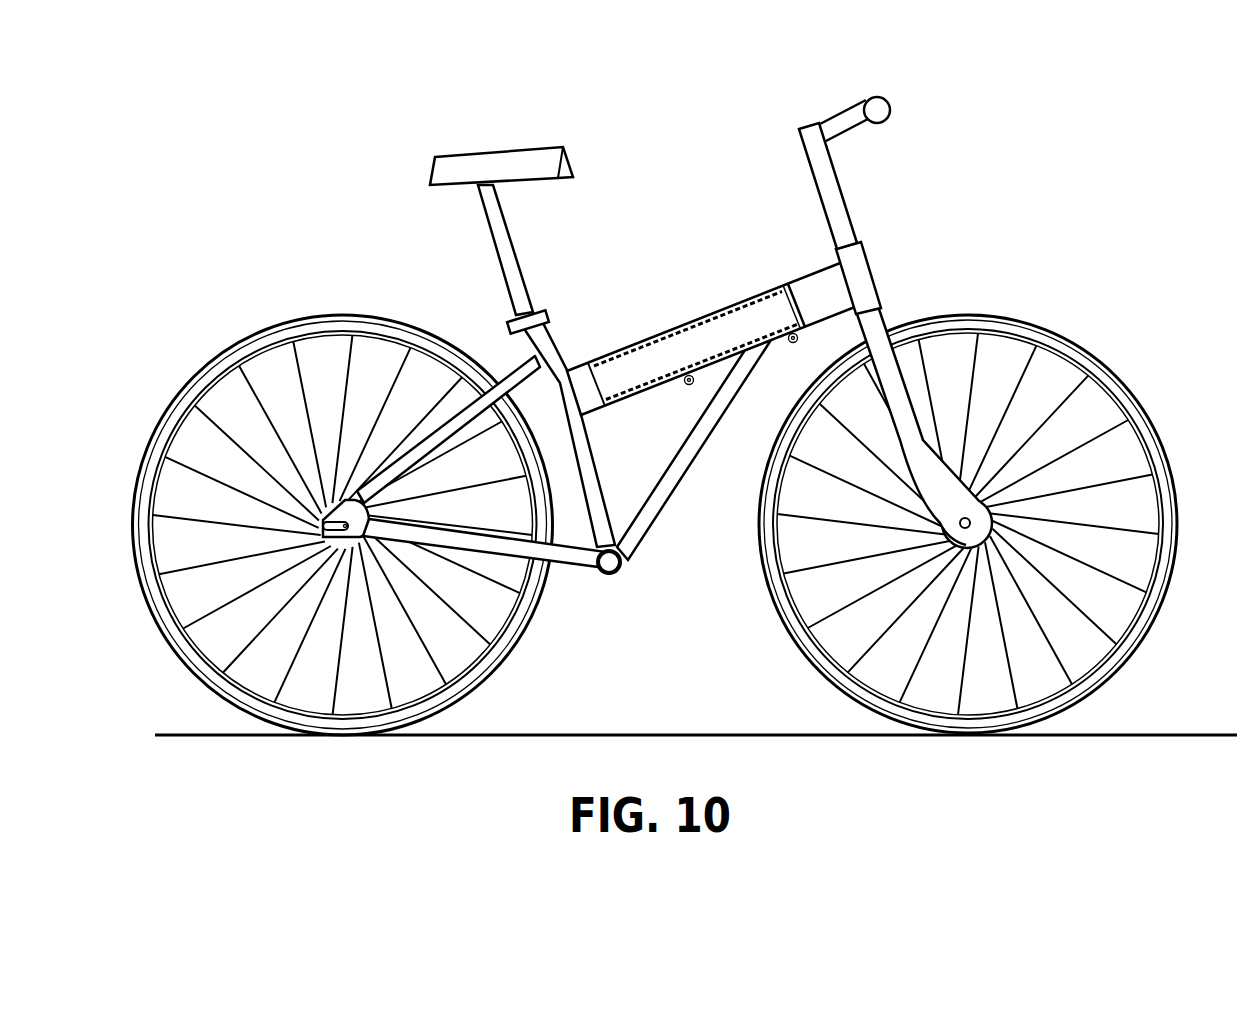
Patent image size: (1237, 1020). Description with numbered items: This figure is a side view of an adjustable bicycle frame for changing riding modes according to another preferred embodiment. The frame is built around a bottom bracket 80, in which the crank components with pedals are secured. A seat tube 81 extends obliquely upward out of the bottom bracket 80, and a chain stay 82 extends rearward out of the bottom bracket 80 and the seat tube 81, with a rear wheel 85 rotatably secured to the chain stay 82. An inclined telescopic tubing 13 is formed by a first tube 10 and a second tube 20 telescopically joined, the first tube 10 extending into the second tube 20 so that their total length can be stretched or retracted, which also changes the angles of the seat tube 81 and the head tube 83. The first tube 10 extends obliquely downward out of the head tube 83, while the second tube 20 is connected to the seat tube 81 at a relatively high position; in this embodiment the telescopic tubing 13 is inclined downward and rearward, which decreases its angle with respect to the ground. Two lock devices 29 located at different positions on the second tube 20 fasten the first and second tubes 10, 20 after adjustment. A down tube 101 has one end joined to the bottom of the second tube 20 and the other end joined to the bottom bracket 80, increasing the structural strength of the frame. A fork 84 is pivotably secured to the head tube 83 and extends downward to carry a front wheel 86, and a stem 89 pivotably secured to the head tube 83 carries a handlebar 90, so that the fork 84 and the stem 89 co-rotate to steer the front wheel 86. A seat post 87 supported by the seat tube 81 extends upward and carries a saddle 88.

The first tube 10 is at (806, 291).
The telescopic tubing 13 is at (694, 306).
The second tube 20 is at (582, 403).
The lock device 29 is at (686, 387).
The bottom bracket 80 is at (612, 578).
The seat tube 81 is at (541, 339).
The chain stay 82 is at (564, 556).
The head tube 83 is at (856, 263).
The fork 84 is at (872, 321).
The rear wheel 85 is at (290, 330).
The front wheel 86 is at (1131, 405).
The seat post 87 is at (498, 237).
The saddle 88 is at (540, 155).
The stem 89 is at (828, 178).
The handlebar 90 is at (879, 97).
The down tube 101 is at (637, 522).